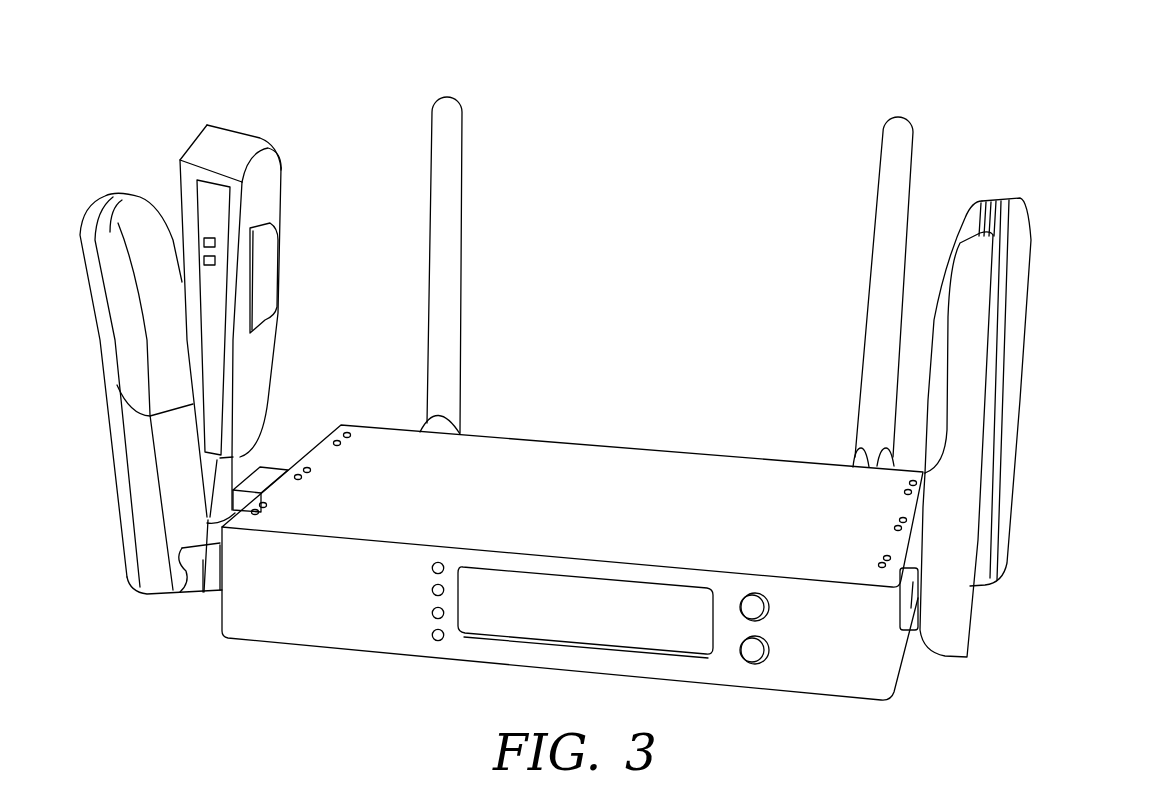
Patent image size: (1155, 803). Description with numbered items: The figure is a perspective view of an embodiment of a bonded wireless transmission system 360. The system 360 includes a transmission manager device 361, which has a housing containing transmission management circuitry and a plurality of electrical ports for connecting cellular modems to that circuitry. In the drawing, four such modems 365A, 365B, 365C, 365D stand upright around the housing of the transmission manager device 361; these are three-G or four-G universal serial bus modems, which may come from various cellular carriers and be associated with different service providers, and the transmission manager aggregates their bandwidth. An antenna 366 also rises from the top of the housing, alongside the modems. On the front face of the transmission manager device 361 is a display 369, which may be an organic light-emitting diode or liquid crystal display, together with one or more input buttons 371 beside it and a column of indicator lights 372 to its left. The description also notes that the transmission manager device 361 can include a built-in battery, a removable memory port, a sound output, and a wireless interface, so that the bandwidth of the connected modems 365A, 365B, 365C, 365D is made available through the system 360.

The bonded wireless transmission system 360 is at (723, 62).
The transmission manager device 361 is at (577, 460).
The cellular modem 365A is at (228, 147).
The cellular modem 365B is at (130, 205).
The cellular modem 365C is at (1023, 218).
The cellular modem 365D is at (990, 267).
The whip antenna 366 is at (447, 108).
The display 369 is at (582, 645).
The input buttons 371 is at (753, 653).
The indicator lights 372 is at (437, 641).